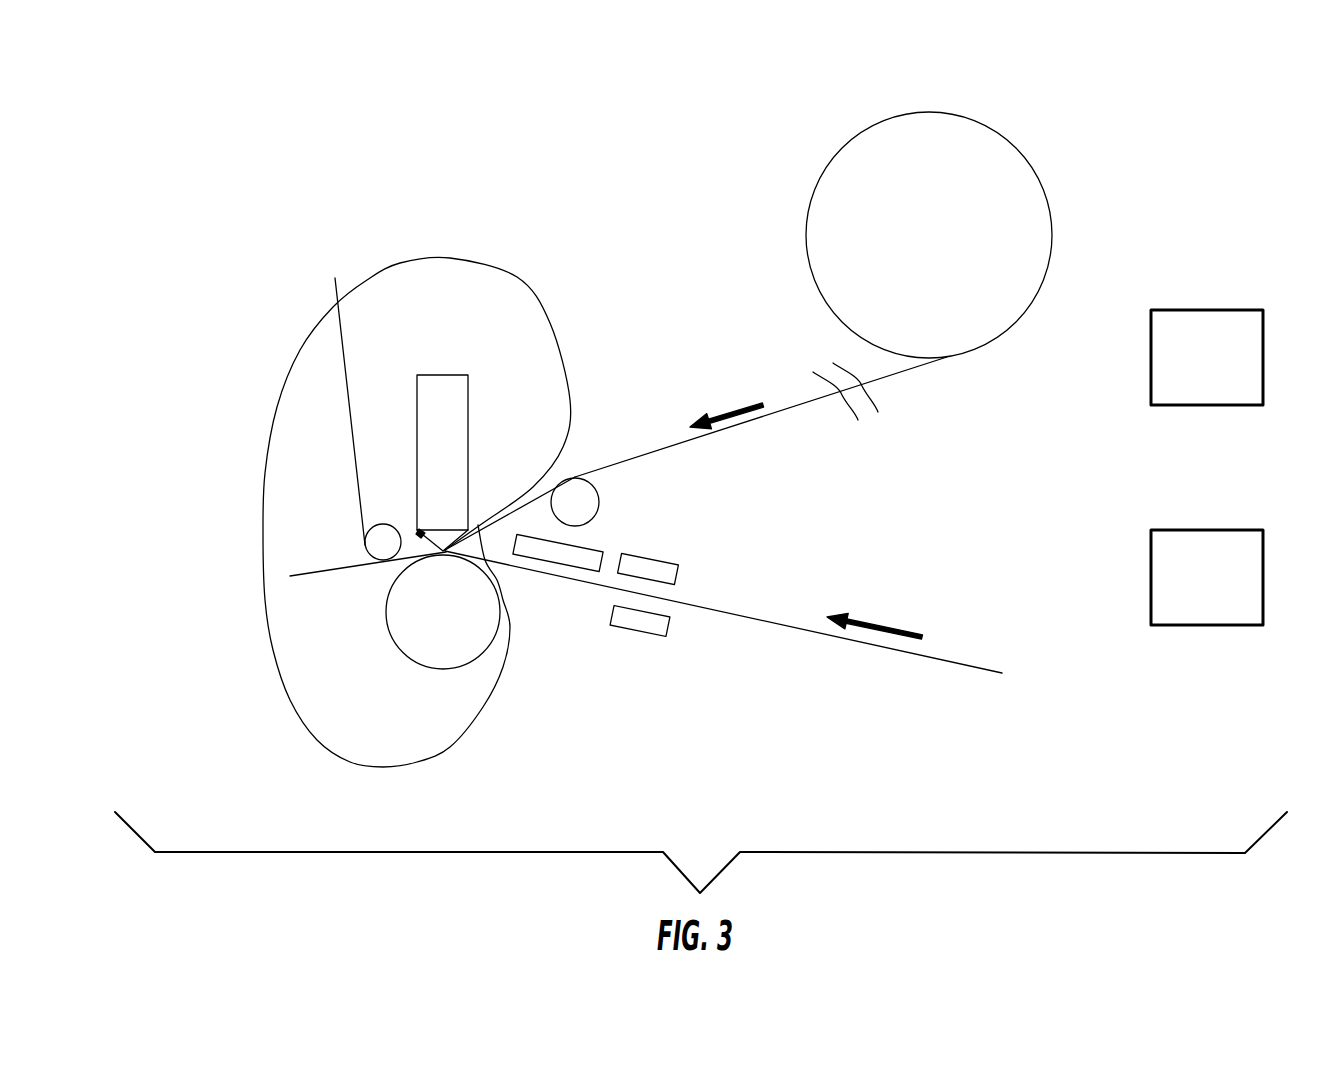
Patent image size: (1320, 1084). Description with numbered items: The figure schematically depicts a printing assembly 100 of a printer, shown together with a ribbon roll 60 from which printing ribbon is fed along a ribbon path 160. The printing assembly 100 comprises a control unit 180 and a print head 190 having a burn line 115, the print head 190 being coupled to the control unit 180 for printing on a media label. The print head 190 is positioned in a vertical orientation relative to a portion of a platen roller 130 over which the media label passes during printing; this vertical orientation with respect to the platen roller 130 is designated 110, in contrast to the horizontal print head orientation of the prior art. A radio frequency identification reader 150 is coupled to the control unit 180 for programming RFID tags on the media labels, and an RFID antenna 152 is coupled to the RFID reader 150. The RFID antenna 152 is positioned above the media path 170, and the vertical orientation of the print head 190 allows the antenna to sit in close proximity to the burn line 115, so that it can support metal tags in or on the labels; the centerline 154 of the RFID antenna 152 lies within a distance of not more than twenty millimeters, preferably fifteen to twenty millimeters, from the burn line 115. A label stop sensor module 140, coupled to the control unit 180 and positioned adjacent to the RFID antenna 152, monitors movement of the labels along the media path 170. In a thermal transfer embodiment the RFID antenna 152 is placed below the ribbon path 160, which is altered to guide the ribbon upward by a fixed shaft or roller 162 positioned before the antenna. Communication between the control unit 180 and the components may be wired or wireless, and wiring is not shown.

The printing assembly 100 is at (524, 139).
The ribbon roll 60 is at (1023, 172).
The vertical orientation designation 110 is at (300, 735).
The burn line 115 is at (420, 531).
The print head 190 is at (447, 375).
The platen roller 130 is at (443, 657).
The fixed shaft or roller 162 is at (587, 483).
The ribbon path 160 is at (733, 410).
The RFID antenna 152 is at (597, 548).
The centerline 154 is at (558, 565).
The label stop sensor module 140 is at (641, 655).
The media path 170 is at (887, 642).
The control unit 180 is at (1206, 296).
The RFID reader 150 is at (1206, 516).